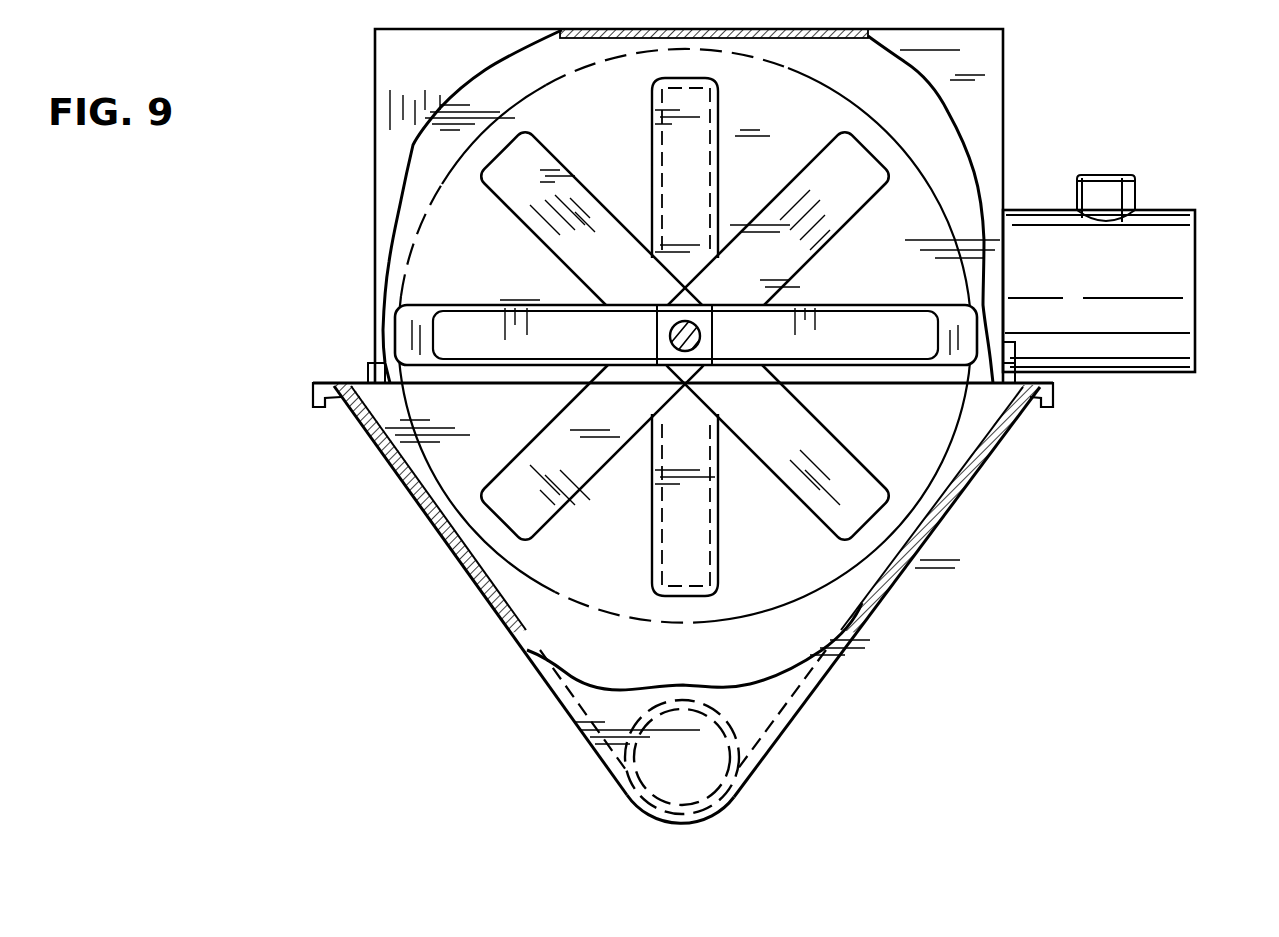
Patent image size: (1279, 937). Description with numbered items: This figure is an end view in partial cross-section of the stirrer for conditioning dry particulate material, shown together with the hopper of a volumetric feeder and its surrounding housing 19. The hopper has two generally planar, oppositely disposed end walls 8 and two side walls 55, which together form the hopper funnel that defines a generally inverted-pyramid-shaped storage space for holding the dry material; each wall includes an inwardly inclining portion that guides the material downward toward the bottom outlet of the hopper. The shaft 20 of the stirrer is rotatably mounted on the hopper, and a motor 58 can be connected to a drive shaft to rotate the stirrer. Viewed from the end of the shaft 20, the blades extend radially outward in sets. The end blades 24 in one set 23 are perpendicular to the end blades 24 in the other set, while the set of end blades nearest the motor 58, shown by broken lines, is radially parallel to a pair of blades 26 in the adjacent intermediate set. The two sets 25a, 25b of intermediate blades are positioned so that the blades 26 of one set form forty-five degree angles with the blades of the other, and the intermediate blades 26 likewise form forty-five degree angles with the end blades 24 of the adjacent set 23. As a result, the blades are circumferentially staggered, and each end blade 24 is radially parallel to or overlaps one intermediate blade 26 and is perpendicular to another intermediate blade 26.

The end wall 8 is at (755, 718).
The mixer housing 19 is at (870, 36).
The shaft 20 is at (697, 348).
The set of end blades 23 is at (537, 298).
The end blade 24 is at (500, 355).
The set of intermediate blades 25a is at (798, 165).
The set of intermediate blades 25b is at (645, 160).
The intermediate blade 26 is at (517, 200).
The side wall 55 is at (407, 458).
The motor 58 is at (1168, 285).